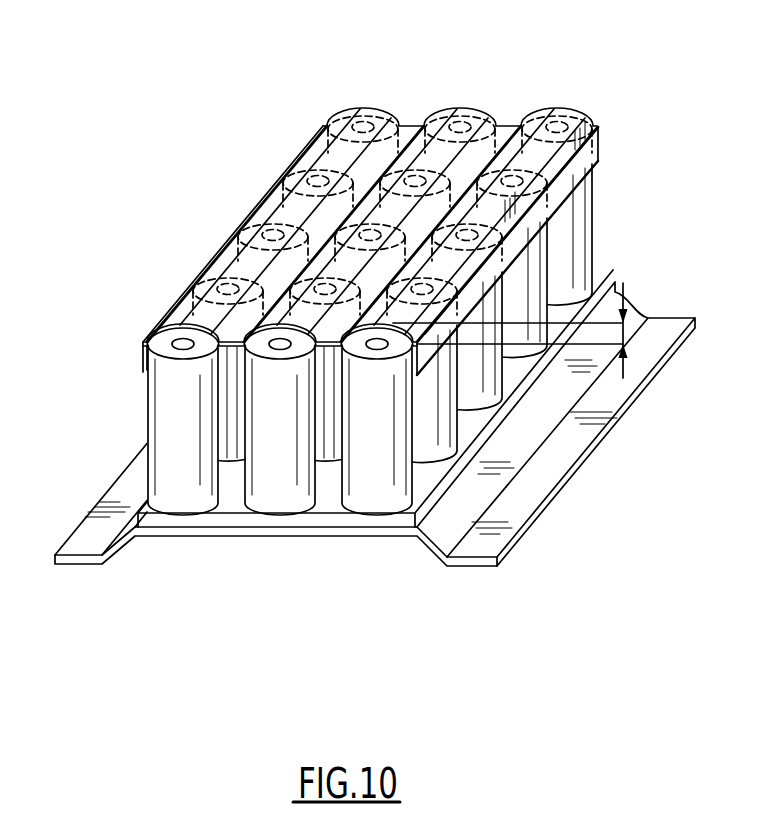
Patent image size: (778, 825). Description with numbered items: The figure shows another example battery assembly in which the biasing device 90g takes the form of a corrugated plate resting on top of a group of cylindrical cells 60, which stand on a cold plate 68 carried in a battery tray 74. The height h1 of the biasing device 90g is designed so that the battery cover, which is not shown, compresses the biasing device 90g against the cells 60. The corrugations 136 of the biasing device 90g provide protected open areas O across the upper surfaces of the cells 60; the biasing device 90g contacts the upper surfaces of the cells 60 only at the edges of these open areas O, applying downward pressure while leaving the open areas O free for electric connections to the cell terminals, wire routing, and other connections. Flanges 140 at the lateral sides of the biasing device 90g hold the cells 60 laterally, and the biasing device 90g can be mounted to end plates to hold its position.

The cells 60 is at (387, 428).
The cold plate 68 is at (367, 520).
The battery tray 74 is at (443, 556).
The biasing device 90g is at (523, 243).
The corrugations 136 is at (565, 117).
The flanges 140 is at (583, 163).
The height of the biasing device h1 is at (623, 333).
The open areas O is at (287, 352).